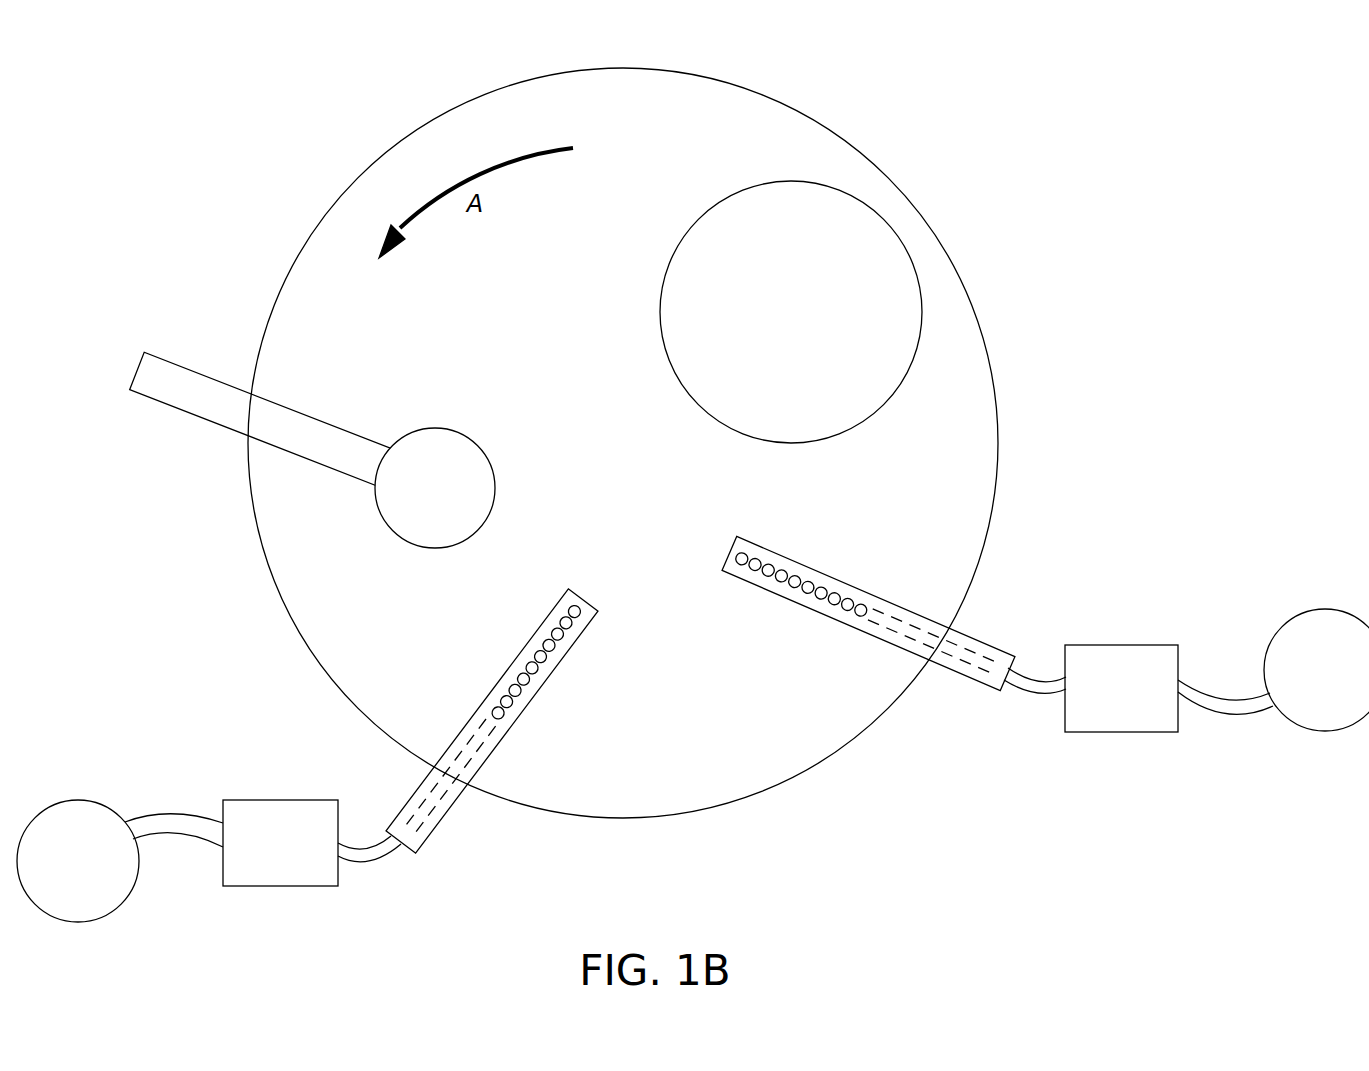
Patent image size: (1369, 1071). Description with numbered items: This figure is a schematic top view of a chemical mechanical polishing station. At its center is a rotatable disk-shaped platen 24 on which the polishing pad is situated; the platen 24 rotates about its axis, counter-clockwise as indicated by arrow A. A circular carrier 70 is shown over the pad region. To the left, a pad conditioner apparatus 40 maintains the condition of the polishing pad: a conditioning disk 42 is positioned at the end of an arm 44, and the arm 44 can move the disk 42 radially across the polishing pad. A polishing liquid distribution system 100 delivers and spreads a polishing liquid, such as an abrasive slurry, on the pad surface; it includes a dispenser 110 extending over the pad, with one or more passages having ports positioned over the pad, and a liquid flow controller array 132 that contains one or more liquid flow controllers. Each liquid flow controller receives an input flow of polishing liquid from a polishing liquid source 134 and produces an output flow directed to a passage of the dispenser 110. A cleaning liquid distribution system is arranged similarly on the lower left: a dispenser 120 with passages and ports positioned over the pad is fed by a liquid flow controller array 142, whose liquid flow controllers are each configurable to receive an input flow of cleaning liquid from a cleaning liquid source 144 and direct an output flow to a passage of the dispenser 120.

The platen 24 is at (977, 557).
The pad conditioner apparatus 40 is at (312, 458).
The conditioning disk 42 is at (425, 427).
The arm 44 is at (292, 410).
The carrier head / substrate 70 is at (922, 325).
The polishing liquid distribution system 100 is at (1025, 699).
The dispenser 110 is at (865, 669).
The dispenser 120 is at (513, 729).
The liquid flow controller array 132 is at (1100, 703).
The polishing liquid source 134 is at (1304, 685).
The liquid flow controller array 142 is at (259, 856).
The cleaning liquid source 144 is at (57, 874).